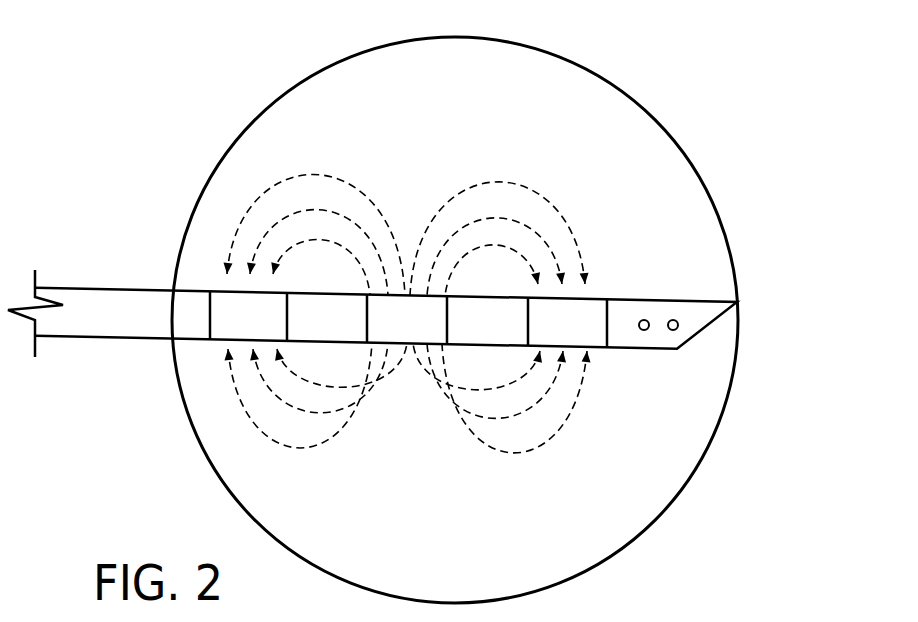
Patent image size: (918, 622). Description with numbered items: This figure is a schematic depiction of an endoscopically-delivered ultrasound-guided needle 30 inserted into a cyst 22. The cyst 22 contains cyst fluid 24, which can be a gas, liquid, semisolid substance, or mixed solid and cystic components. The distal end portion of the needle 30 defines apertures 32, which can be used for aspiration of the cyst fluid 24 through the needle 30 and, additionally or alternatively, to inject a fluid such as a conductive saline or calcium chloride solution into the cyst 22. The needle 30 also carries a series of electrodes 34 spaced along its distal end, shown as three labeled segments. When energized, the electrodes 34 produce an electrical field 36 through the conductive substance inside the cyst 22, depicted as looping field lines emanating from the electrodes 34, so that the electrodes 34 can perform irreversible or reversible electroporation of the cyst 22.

The cyst 22 is at (673, 137).
The cyst fluid 24 is at (500, 125).
The needle 30 is at (112, 294).
The apertures 32 is at (644, 320).
The electrodes 34 is at (234, 328).
The electrical field 36 is at (322, 448).